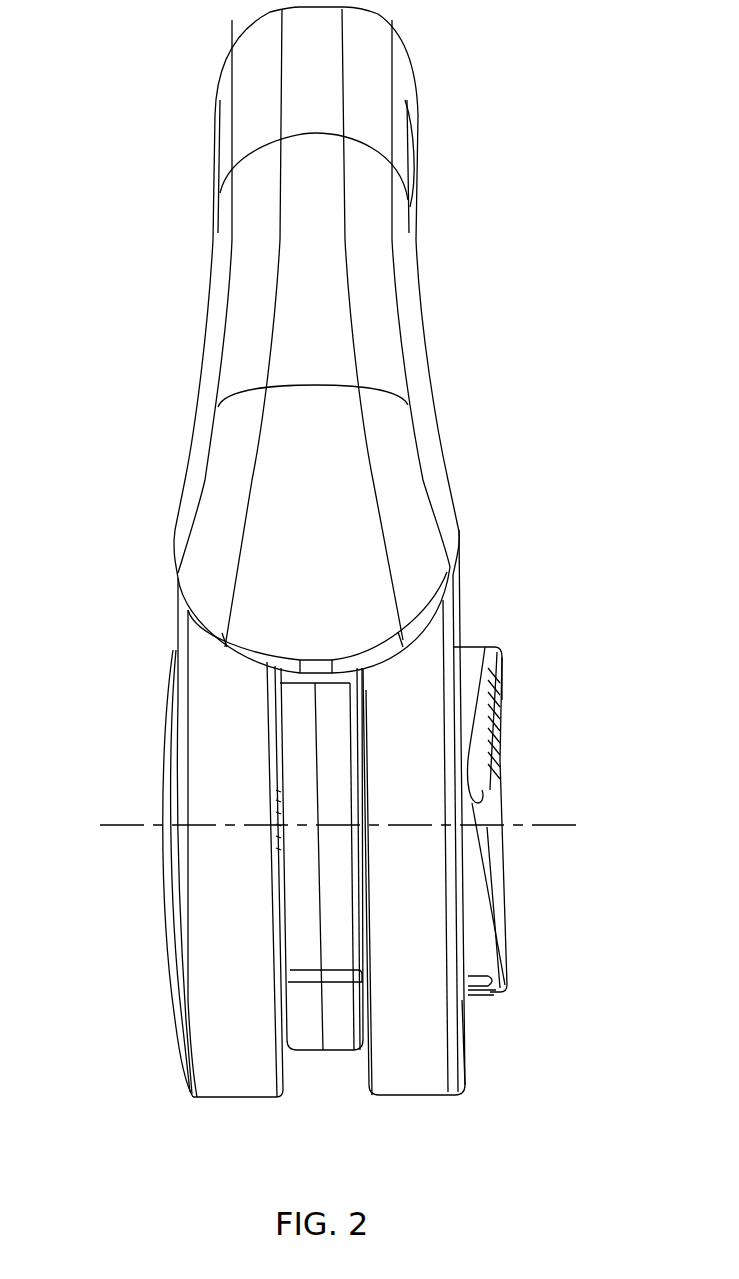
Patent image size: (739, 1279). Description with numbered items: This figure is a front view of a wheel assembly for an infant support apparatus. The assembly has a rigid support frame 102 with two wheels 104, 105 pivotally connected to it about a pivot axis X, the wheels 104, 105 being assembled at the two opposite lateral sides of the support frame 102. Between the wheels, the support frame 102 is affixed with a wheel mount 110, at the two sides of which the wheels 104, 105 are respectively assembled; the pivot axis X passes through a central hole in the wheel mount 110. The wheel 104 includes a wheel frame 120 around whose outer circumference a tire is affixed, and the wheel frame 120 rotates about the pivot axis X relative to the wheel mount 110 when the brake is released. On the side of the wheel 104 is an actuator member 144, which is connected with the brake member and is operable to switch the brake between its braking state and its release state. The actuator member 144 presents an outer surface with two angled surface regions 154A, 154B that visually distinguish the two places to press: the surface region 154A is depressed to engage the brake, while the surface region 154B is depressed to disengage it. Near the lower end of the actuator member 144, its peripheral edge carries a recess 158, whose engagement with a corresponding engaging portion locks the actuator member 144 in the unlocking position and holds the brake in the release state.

The support frame 102 is at (222, 259).
The wheel 104 is at (490, 1083).
The wheel 105 is at (162, 1072).
The wheel mount 110 is at (328, 1052).
The wheel frame 120 is at (462, 1017).
The actuator member 144 is at (480, 646).
The surface region 154A is at (502, 702).
The surface region 154B is at (500, 907).
The recess 158 is at (484, 996).
The pivot axis X is at (547, 823).